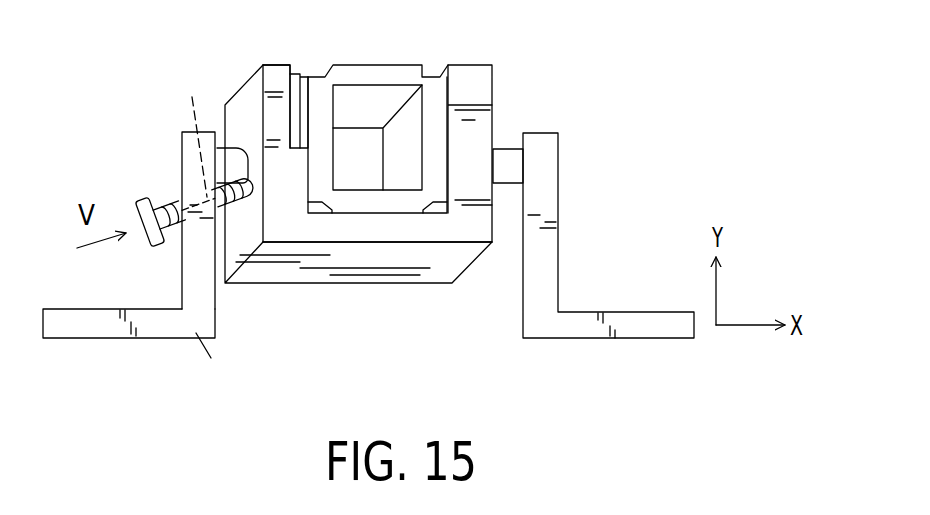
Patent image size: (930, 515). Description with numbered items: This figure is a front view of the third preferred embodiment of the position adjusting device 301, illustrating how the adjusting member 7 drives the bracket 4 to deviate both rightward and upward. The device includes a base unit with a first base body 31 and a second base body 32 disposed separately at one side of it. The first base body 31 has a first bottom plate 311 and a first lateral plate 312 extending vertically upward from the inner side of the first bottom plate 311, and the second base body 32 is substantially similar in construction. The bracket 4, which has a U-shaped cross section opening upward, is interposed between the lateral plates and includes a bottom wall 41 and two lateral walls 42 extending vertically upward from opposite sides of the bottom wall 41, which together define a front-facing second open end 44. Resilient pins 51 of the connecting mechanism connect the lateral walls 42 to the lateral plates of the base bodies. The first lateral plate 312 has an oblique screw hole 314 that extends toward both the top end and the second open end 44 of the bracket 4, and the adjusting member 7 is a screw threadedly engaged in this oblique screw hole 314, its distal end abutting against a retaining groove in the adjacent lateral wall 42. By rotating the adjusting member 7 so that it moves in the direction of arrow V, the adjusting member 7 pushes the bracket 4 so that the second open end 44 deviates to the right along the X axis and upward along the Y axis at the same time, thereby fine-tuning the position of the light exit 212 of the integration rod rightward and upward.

The bracket 4 is at (361, 202).
The bottom wall 41 is at (433, 230).
The lateral walls 42 is at (282, 93).
The second open end 44 is at (377, 188).
The light exit 212 is at (369, 136).
The position adjusting device 301 is at (431, 202).
The first base body 31 is at (142, 238).
The first bottom plate 311 is at (100, 325).
The first lateral plate 312 is at (195, 272).
The oblique screw hole 314 is at (192, 132).
The adjusting member 7 is at (165, 212).
The second base body 32 is at (597, 234).
The resilient pins 51 is at (508, 162).